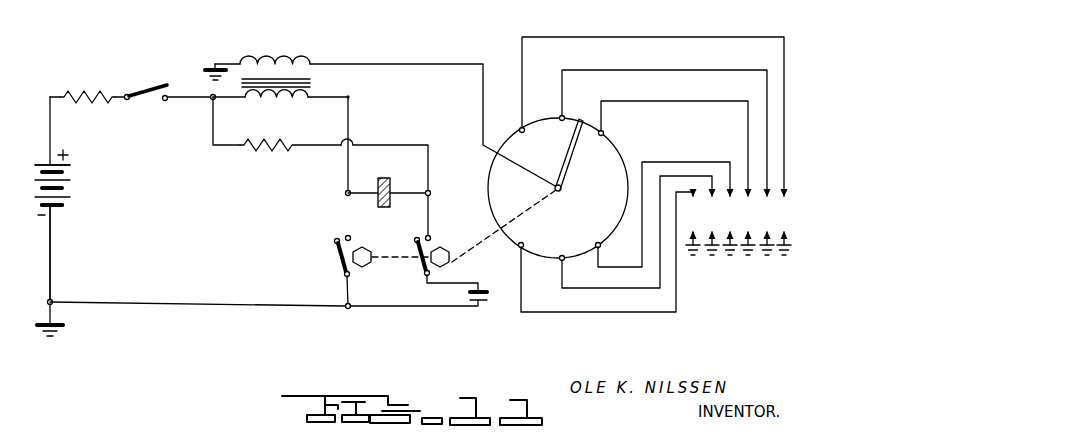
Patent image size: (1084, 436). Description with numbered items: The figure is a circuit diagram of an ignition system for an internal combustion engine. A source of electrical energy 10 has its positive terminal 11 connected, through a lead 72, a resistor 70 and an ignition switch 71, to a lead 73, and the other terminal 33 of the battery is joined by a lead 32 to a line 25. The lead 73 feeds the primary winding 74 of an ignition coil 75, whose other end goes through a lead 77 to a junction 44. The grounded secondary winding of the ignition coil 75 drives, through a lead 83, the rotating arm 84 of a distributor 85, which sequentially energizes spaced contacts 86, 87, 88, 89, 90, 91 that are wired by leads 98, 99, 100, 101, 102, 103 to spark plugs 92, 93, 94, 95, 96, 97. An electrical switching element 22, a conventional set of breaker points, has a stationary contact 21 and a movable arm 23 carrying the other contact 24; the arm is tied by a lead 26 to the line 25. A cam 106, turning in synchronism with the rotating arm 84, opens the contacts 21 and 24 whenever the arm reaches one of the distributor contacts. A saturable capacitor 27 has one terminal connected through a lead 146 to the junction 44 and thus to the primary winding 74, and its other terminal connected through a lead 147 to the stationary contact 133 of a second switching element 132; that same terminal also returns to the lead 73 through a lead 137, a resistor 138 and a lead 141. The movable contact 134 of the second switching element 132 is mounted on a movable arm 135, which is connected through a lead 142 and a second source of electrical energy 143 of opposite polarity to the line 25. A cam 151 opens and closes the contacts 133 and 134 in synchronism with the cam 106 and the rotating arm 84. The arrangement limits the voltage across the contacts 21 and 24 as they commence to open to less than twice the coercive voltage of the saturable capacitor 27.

The source of electrical energy 10 is at (33, 189).
The positive terminal 11 is at (50, 162).
The contact 21 is at (345, 236).
The electrical switching element 22 is at (333, 258).
The movable arm 23 is at (343, 268).
The contact 24 is at (335, 240).
The lead 25 is at (245, 308).
The lead 26 is at (346, 296).
The saturable capacitor 27 is at (392, 186).
The lead 32 is at (55, 273).
The other terminal 33 is at (54, 208).
The junction 44 is at (348, 97).
The resistor 70 is at (95, 100).
The ignition switch 71 is at (148, 88).
The lead 72 is at (57, 96).
The lead 73 is at (187, 98).
The primary winding 74 is at (270, 101).
The ignition coil 75 is at (283, 59).
The lead 77 is at (322, 98).
The lead 83 is at (405, 64).
The rotating arm 84 is at (571, 168).
The distributor 85 is at (477, 193).
The contact 86 is at (524, 126).
The contact 87 is at (565, 116).
The contact 88 is at (605, 131).
The contact 89 is at (601, 246).
The contact 90 is at (565, 260).
The contact 91 is at (523, 248).
The spark plug 92 is at (756, 258).
The spark plug 93 is at (766, 212).
The spark plug 94 is at (747, 212).
The spark plug 95 is at (729, 212).
The spark plug 96 is at (711, 212).
The spark plug 97 is at (692, 212).
The lead 98 is at (728, 37).
The lead 99 is at (715, 70).
The lead 100 is at (683, 101).
The lead 101 is at (670, 162).
The lead 102 is at (585, 289).
The lead 103 is at (600, 313).
The cam 106 is at (370, 263).
The second switching element 132 is at (461, 250).
The stationary contact 133 is at (432, 238).
The contact 134 is at (414, 240).
The movable arm 135 is at (421, 268).
The lead 137 is at (405, 143).
The resistor 138 is at (271, 146).
The lead 141 is at (232, 146).
The lead 142 is at (456, 284).
The source of electrical energy 143 is at (490, 292).
The lead 146 is at (363, 190).
The lead 147 is at (406, 199).
The cam 151 is at (448, 262).